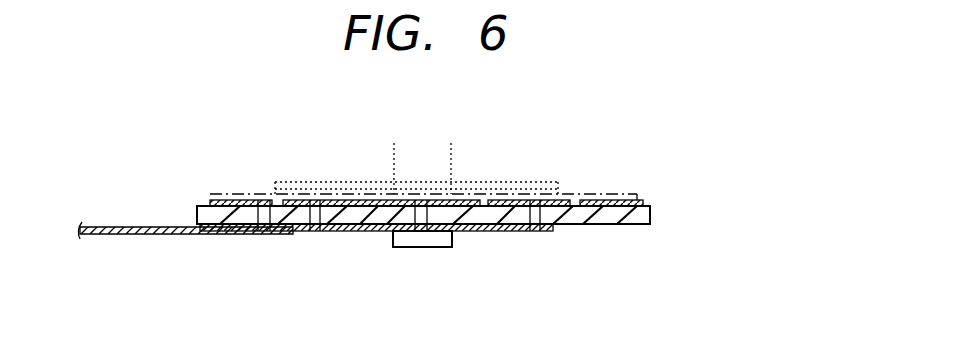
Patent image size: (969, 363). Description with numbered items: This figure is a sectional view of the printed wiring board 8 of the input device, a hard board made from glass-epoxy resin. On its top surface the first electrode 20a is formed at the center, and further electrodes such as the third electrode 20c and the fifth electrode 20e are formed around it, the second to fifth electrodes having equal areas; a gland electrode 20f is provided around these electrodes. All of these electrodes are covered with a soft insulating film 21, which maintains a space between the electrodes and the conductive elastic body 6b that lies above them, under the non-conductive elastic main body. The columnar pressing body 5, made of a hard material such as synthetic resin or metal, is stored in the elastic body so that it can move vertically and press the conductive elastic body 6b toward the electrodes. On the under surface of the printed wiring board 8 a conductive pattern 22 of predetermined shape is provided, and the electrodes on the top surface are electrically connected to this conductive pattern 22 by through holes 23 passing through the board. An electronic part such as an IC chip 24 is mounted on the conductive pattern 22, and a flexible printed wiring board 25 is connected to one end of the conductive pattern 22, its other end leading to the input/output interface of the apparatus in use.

The pressing body 5 is at (392, 158).
The conductive elastic body 6b is at (508, 190).
The printed wiring board 8 is at (617, 226).
The first electrode 20a is at (424, 200).
The third electrode 20c is at (314, 200).
The fifth electrode 20e is at (557, 200).
The gland electrode 20f is at (238, 200).
The insulating film 21 is at (262, 200).
The conductive pattern 22 is at (493, 230).
The through holes 23 is at (315, 232).
The IC chip 24 is at (409, 238).
The flexible printed wiring board 25 is at (126, 234).